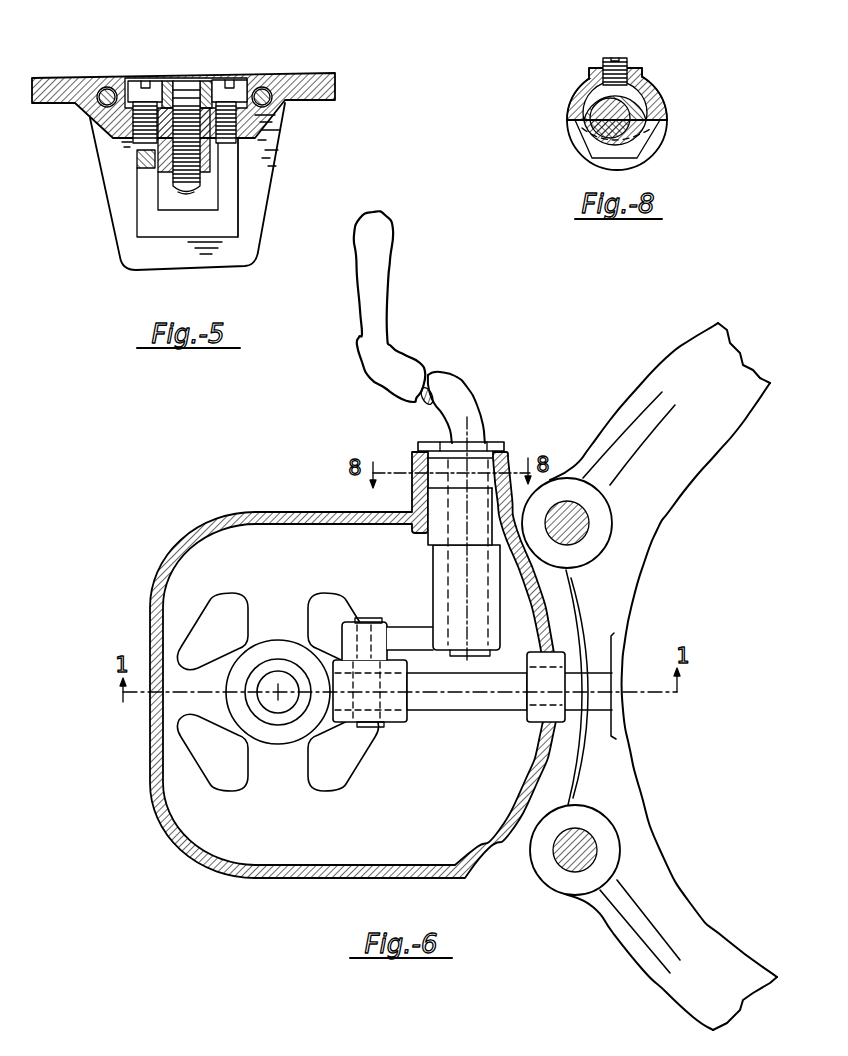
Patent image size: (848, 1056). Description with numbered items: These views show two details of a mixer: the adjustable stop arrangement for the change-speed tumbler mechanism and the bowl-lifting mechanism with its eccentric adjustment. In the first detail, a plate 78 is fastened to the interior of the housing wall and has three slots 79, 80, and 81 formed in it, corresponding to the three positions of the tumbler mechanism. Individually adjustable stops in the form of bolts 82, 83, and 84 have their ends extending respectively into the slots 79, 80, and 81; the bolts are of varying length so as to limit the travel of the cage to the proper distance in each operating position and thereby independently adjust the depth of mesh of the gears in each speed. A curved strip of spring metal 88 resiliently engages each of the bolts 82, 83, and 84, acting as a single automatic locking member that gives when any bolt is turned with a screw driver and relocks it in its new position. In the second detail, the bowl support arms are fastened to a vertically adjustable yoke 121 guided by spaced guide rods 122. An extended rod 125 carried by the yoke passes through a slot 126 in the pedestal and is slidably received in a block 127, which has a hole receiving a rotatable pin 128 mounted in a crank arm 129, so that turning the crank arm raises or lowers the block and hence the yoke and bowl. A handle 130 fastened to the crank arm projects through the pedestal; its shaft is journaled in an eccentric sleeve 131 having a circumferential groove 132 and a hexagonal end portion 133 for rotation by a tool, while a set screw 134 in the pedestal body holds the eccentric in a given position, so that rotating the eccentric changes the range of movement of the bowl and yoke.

In FIG. 5, the plate 78 is at (110, 173).
In FIG. 5, the slot 79 is at (145, 202).
In FIG. 5, the slot 80 is at (188, 202).
In FIG. 5, the slot 81 is at (226, 187).
In FIG. 5, the bolt 82 is at (137, 88).
In FIG. 5, the bolt 83 is at (183, 110).
In FIG. 5, the bolt 84 is at (237, 87).
In FIG. 5, the curved strip of spring metal 88 is at (207, 82).
In FIG. 6, the yoke 121 is at (613, 600).
In FIG. 6, the guide rods 122 is at (553, 860).
In FIG. 6, the rod 125 is at (487, 688).
In FIG. 6, the slot 126 is at (543, 733).
In FIG. 6, the block 127 is at (403, 724).
In FIG. 6, the rotatable pin 128 is at (368, 622).
In FIG. 6, the crank arm 129 is at (428, 615).
In FIG. 8, the handle 130 is at (600, 130).
In FIG. 6, the handle 130 is at (393, 363).
In FIG. 8, the eccentric sleeve 131 is at (570, 100).
In FIG. 6, the circumferential groove 132 is at (432, 467).
In FIG. 6, the hexagonal end portion 133 is at (497, 440).
In FIG. 8, the set screw 134 is at (627, 65).